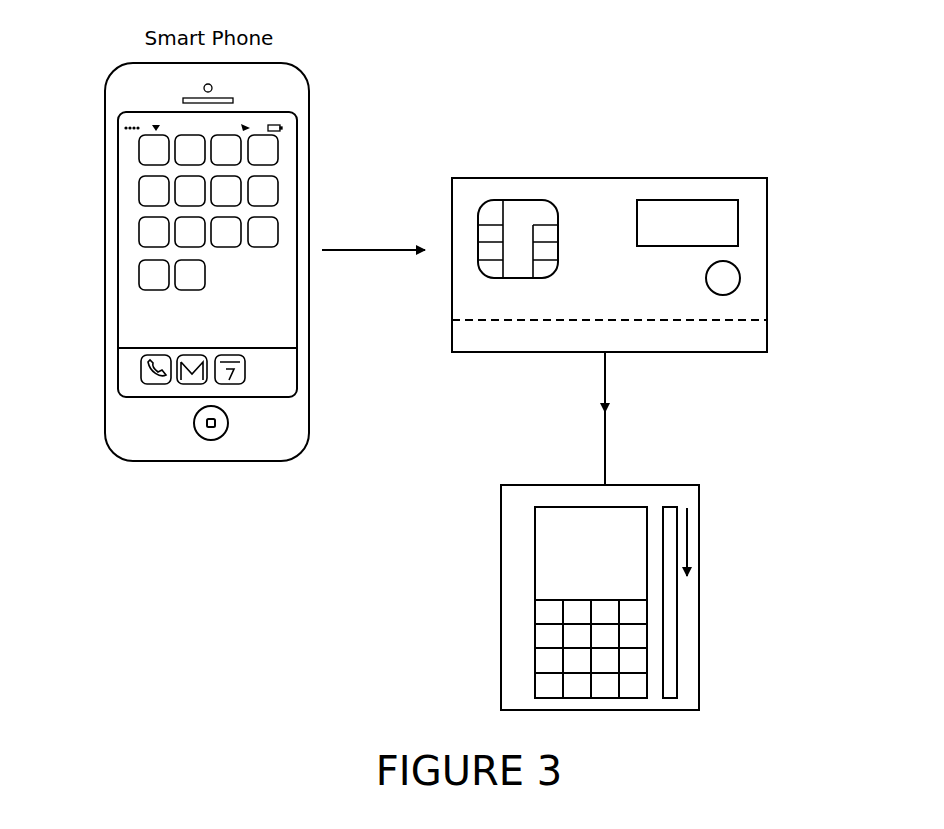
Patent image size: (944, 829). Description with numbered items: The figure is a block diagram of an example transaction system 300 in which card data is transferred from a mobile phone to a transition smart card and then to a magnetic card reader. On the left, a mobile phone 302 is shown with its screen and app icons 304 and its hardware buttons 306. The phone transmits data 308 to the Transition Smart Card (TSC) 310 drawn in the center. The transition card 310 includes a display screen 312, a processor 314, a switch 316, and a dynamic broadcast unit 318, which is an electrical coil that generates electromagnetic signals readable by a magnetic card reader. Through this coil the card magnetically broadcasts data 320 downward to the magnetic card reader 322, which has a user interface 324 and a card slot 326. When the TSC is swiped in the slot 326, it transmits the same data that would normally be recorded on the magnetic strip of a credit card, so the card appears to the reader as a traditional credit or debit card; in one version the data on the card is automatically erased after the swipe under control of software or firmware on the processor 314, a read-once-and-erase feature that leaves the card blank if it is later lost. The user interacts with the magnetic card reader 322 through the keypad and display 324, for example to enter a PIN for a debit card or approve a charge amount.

The transaction system 300 is at (790, 108).
The mobile phone 302 is at (106, 123).
The screen and app icons 304 is at (150, 305).
The hardware buttons 306 is at (211, 440).
The data 308 is at (370, 222).
The transition smart card 310 is at (767, 200).
The display screen 312 is at (697, 200).
The processor 314 is at (512, 200).
The switch 316 is at (740, 278).
The dynamic broadcast unit 318 is at (497, 343).
The data 320 is at (605, 450).
The magnetic card reader 322 is at (501, 548).
The user interface 324 is at (535, 667).
The card slot 326 is at (655, 523).